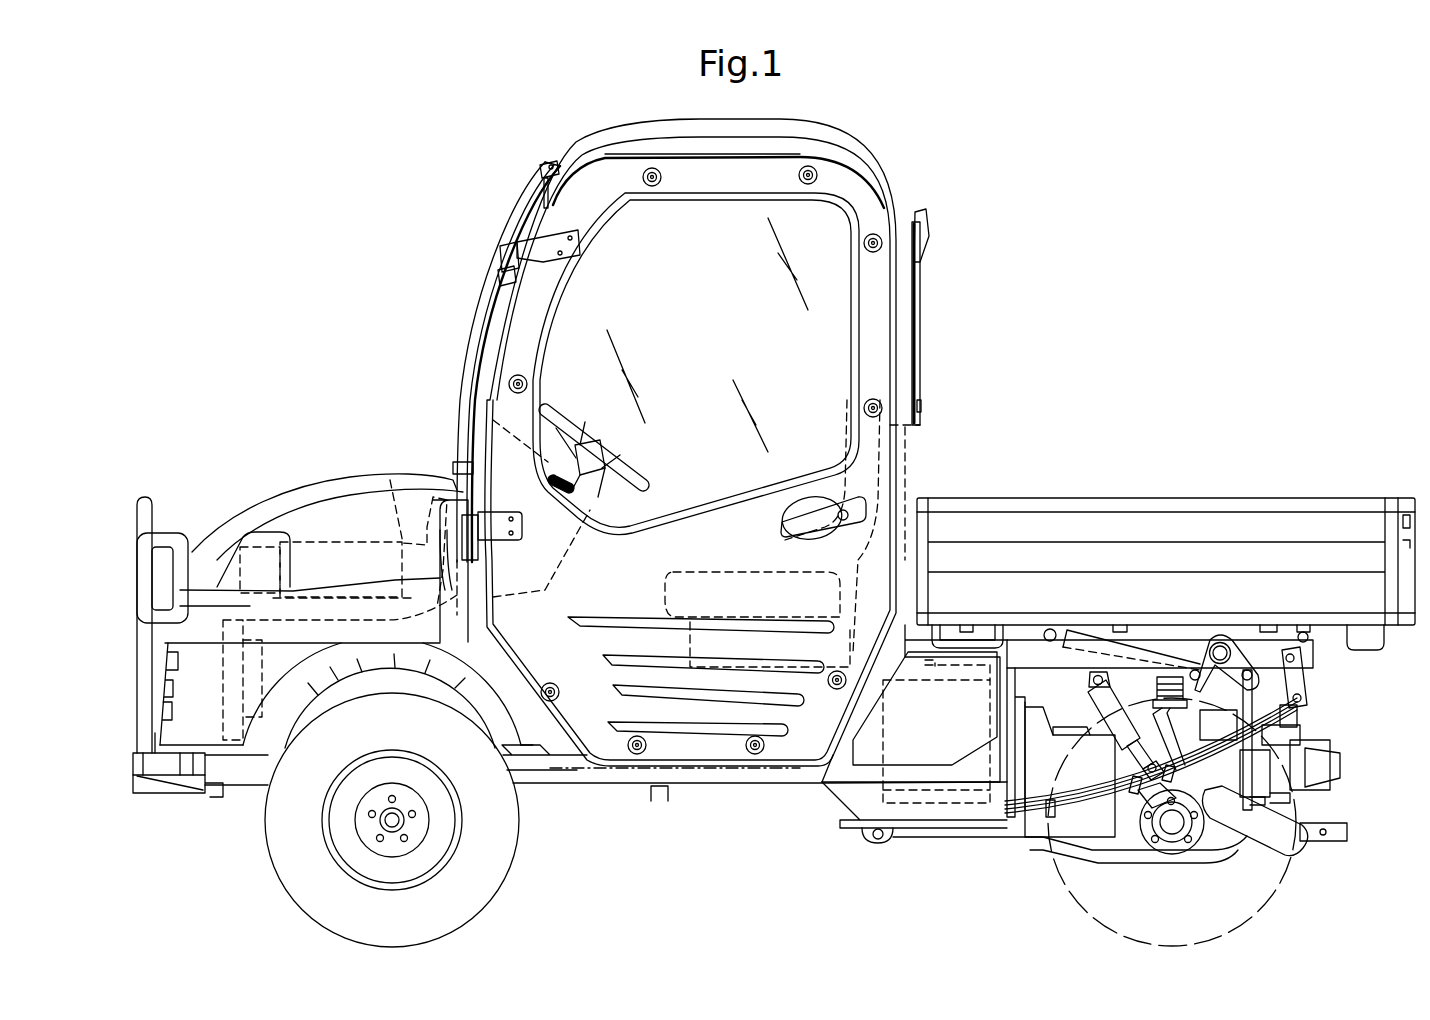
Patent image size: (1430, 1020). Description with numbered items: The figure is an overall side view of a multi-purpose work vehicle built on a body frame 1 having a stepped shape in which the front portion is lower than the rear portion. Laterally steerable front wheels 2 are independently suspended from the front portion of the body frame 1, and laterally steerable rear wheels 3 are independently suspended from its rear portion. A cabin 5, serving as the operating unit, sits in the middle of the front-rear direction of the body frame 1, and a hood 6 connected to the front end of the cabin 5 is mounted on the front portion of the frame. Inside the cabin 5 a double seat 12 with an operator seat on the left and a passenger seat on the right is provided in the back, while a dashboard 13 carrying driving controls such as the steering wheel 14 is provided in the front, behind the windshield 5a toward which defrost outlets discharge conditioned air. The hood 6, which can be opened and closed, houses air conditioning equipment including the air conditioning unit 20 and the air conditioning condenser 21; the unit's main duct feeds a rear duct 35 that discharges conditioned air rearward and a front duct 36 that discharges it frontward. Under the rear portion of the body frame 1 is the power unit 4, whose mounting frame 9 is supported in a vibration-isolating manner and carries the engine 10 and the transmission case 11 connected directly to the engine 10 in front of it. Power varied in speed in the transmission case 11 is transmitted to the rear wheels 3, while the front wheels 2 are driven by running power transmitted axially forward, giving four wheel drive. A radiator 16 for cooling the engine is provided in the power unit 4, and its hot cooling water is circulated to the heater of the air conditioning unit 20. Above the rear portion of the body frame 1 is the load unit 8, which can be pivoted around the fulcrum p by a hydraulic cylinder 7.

The body frame 1 is at (585, 786).
The front wheels 2 is at (278, 860).
The rear wheels 3 is at (1290, 865).
The power unit 4 is at (1016, 855).
The cabin 5 is at (897, 150).
The windshield 5a is at (490, 338).
The hood 6 is at (226, 524).
The hydraulic cylinder 7 is at (1080, 630).
The load unit 8 is at (1145, 497).
The mounting frame 9 is at (1135, 853).
The engine 10 is at (1015, 687).
The transmission case 11 is at (1090, 829).
The double seat 12 is at (678, 582).
The dashboard 13 is at (537, 460).
The steering wheel 14 is at (633, 470).
The radiator 16 is at (918, 806).
The air conditioning unit 20 is at (338, 544).
The air conditioning condenser 21 is at (225, 715).
The rear duct 35 is at (403, 540).
The front duct 36 is at (338, 620).
The fulcrum p is at (1305, 632).